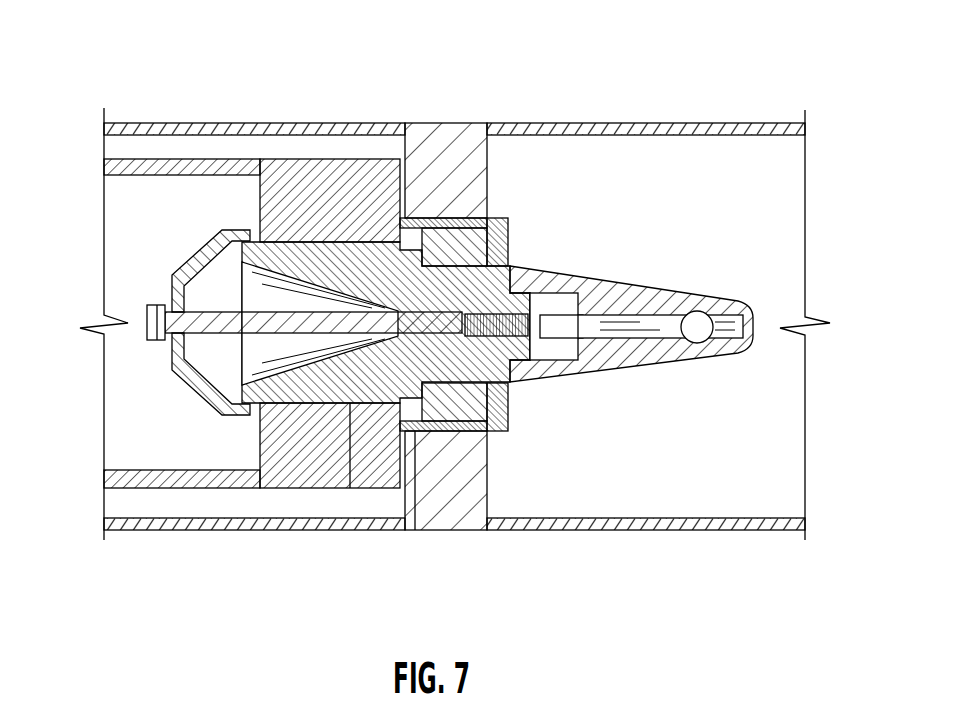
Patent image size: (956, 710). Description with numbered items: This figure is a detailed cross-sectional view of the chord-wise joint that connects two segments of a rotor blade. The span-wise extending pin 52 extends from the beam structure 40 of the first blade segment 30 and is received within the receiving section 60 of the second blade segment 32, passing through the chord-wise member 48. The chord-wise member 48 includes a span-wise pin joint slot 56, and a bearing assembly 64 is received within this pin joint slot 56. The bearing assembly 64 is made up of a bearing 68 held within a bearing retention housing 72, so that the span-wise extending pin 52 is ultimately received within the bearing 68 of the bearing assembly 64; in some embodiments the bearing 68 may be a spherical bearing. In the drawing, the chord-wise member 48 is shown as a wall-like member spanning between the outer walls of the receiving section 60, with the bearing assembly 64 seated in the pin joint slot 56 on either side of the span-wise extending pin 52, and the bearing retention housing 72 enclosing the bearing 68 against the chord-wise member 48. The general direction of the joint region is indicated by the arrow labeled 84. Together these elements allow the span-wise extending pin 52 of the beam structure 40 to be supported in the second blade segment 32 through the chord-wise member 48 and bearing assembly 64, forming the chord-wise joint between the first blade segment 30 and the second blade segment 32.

The first conduit section 30 is at (180, 147).
The second blade segment 32 is at (750, 147).
The beam structure 40 is at (121, 238).
The chord-wise member 48 is at (445, 508).
The span-wise extending pin 52 is at (345, 488).
The span-wise pin joint slot 56 is at (415, 530).
The receiving section 60 is at (299, 118).
The bearing assembly 64 is at (516, 229).
The bearing 68 is at (508, 247).
The bearing retention housing 72 is at (494, 224).
The flow direction 84 is at (402, 46).